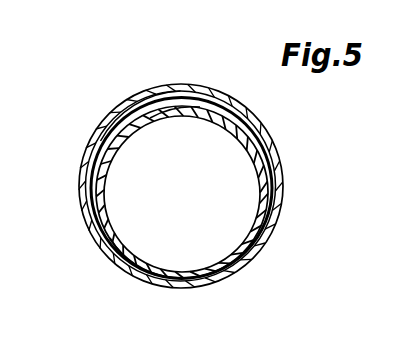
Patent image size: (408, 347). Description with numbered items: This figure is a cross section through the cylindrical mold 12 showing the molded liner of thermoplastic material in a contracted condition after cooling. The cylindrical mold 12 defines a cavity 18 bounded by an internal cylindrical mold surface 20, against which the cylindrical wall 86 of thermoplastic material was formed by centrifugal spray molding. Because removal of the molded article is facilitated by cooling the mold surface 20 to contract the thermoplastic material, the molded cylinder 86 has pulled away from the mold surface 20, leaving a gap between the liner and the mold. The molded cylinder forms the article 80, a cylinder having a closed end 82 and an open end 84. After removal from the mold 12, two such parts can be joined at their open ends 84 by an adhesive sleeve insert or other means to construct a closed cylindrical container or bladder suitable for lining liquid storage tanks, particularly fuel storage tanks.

The cylindrical mold 12 is at (290, 146).
The cavity 18 is at (111, 118).
The internal cylindrical mold surface 20 is at (170, 102).
The article 80 is at (119, 212).
The closed end 82 is at (192, 247).
The open end 84 is at (122, 246).
The cylindrical wall 86 is at (179, 116).